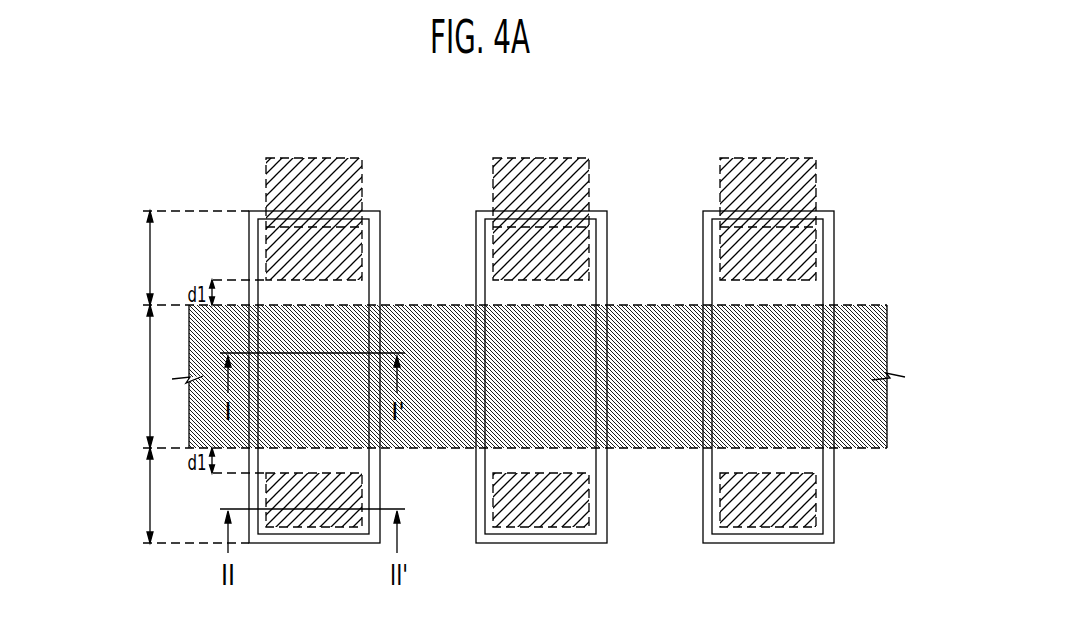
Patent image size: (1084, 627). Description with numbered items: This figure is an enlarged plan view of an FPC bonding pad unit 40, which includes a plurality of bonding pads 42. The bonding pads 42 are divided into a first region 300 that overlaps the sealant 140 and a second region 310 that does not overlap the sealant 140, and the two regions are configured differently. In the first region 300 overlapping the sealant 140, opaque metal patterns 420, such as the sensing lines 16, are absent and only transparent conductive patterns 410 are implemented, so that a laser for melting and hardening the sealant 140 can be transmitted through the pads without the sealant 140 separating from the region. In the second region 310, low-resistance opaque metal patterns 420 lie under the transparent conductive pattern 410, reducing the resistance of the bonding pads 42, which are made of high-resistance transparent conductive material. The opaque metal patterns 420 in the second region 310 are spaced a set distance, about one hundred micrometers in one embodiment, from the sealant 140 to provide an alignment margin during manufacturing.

The FPC bonding pad unit 40 is at (834, 117).
The sensing lines 16 is at (808, 181).
The sealant 140 is at (868, 305).
The opaque metal patterns 420 is at (720, 251).
The bonding pads 42 is at (832, 522).
The transparent conductive patterns 410 is at (733, 534).
The first region 300 is at (119, 376).
The second region 310 is at (116, 377).